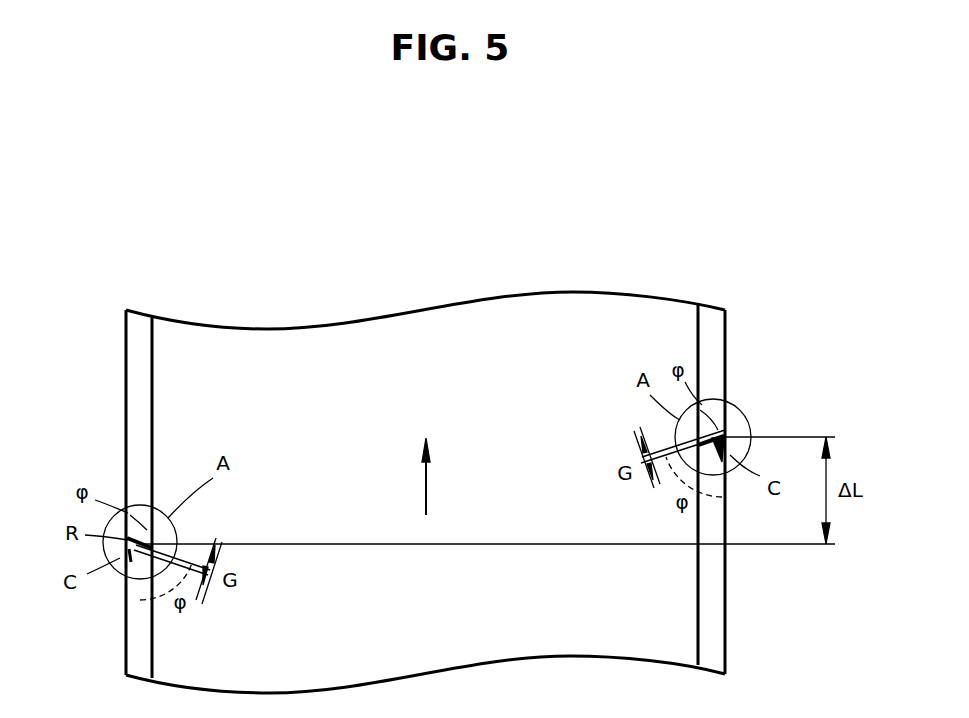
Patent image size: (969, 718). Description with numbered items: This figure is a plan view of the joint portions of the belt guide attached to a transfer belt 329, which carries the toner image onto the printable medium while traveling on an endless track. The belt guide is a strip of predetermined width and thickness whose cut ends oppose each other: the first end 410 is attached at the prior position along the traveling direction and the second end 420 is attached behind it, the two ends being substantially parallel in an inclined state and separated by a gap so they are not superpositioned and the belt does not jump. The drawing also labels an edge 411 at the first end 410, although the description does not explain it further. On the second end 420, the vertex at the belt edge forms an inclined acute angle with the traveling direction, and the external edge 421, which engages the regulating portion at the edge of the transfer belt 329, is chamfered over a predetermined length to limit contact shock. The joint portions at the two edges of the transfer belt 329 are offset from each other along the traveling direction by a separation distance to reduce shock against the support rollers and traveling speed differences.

The transfer belt 329 is at (507, 293).
The first end 410 is at (138, 467).
The first wall outer edge 411 is at (126, 492).
The second end 420 is at (137, 615).
The external edge 421 is at (125, 653).